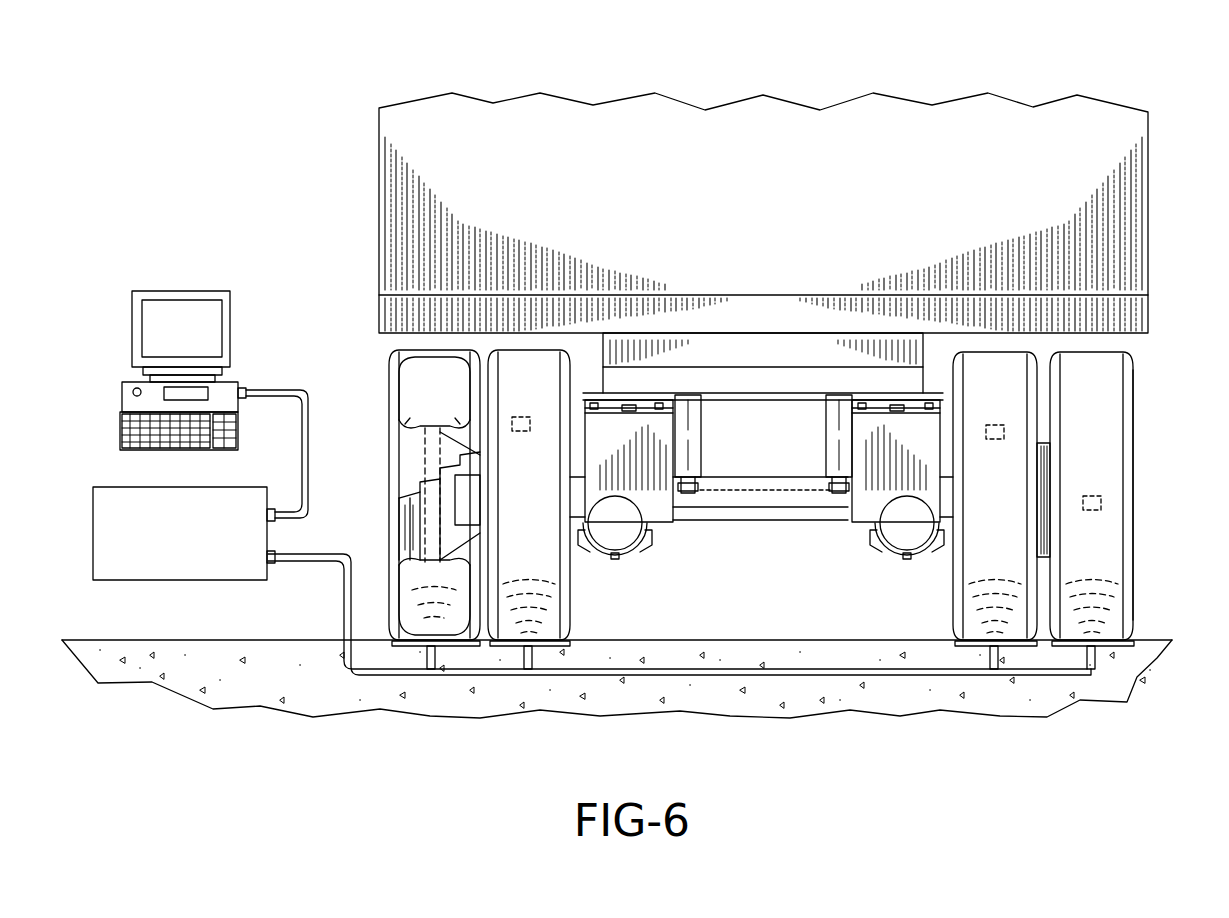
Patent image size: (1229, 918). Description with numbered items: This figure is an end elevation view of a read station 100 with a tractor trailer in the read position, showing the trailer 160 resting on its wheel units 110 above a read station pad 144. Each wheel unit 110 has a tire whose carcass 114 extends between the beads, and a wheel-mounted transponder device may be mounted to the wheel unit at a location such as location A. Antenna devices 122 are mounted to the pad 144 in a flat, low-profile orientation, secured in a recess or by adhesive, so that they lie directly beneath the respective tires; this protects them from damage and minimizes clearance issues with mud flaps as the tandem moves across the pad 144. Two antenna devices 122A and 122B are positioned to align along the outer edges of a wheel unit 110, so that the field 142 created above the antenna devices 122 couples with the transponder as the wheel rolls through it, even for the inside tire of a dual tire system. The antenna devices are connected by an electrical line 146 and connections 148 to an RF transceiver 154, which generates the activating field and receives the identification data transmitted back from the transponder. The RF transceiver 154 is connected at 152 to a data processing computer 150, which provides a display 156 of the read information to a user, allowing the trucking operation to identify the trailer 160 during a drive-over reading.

The read station 100 is at (288, 121).
The wheel unit 110 is at (1117, 543).
The tire carcass 114 is at (1087, 496).
The antenna device 122 is at (1087, 556).
The antenna device 122A is at (452, 642).
The antenna device 122B is at (547, 642).
The field 142 is at (1093, 588).
The read station pad 144 is at (810, 653).
The electrical line 146 is at (360, 677).
The connections 148 is at (427, 658).
The data processing computer 150 is at (156, 330).
The connection 152 is at (310, 470).
The RF transceiver 154 is at (113, 580).
The display 156 is at (205, 313).
The trailer 160 is at (1118, 238).
The location A is at (1105, 500).